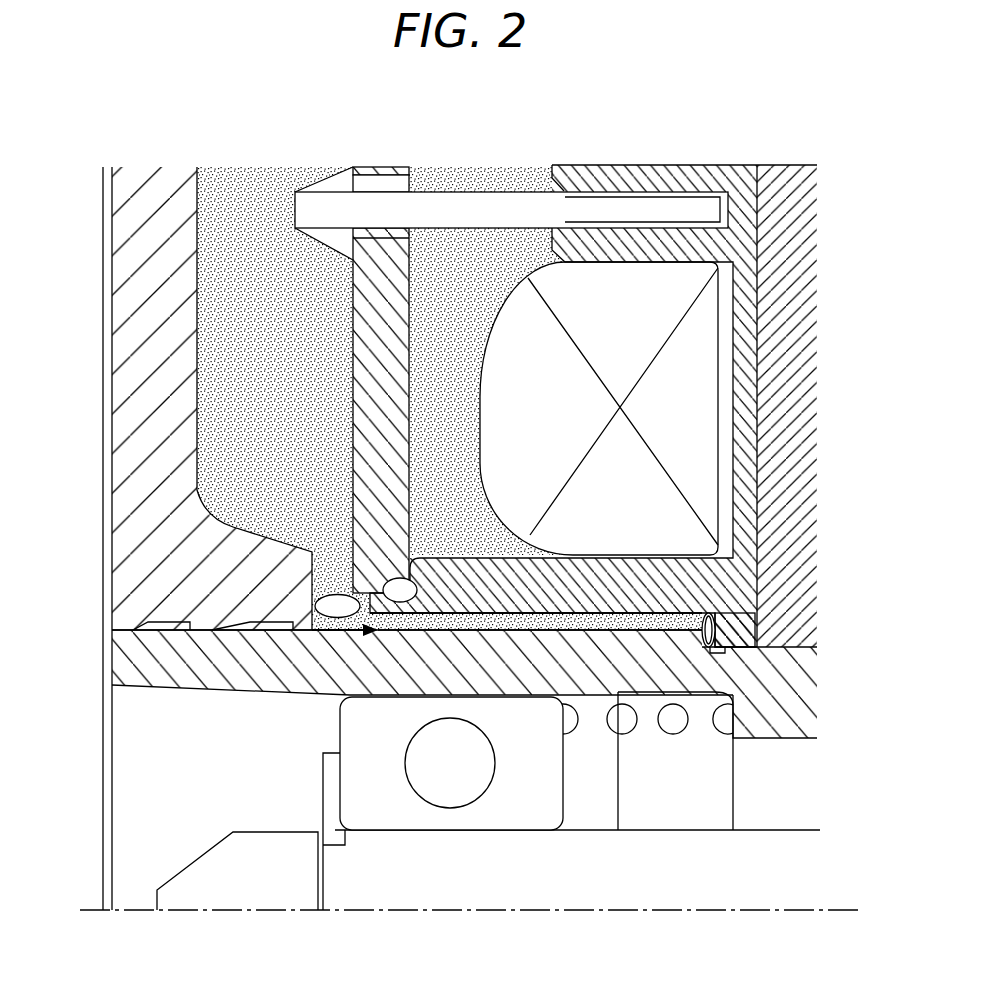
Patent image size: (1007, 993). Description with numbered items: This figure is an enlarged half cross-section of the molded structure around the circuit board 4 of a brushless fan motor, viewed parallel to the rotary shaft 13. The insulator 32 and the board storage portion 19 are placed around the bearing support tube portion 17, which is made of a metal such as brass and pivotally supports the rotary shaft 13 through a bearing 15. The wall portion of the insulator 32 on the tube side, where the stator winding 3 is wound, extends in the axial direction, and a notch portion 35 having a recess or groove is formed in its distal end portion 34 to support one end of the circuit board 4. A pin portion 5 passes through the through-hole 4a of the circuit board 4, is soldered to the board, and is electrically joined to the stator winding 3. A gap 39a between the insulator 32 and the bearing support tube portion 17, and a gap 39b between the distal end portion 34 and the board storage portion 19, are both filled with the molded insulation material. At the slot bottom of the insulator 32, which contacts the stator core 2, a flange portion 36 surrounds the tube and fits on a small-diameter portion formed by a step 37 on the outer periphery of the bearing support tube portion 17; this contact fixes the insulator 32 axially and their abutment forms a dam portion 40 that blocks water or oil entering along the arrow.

The stator core 2 is at (790, 453).
The stator winding 3 is at (510, 462).
The circuit board 4 is at (380, 397).
The through-hole 4a is at (383, 228).
The pin portion 5 is at (487, 210).
The rotary shaft 13 is at (550, 880).
The bearing 15 is at (380, 800).
The bearing support tube portion 17 is at (218, 678).
The board storage portion 19 is at (150, 521).
The insulator 32 is at (730, 594).
The distal end portion 34 is at (443, 582).
The notch portion 35 is at (390, 577).
The flange portion 36 is at (808, 698).
The step 37 is at (703, 642).
The gap 39a is at (628, 622).
The gap 39b is at (325, 600).
The dam portion 40 is at (715, 619).